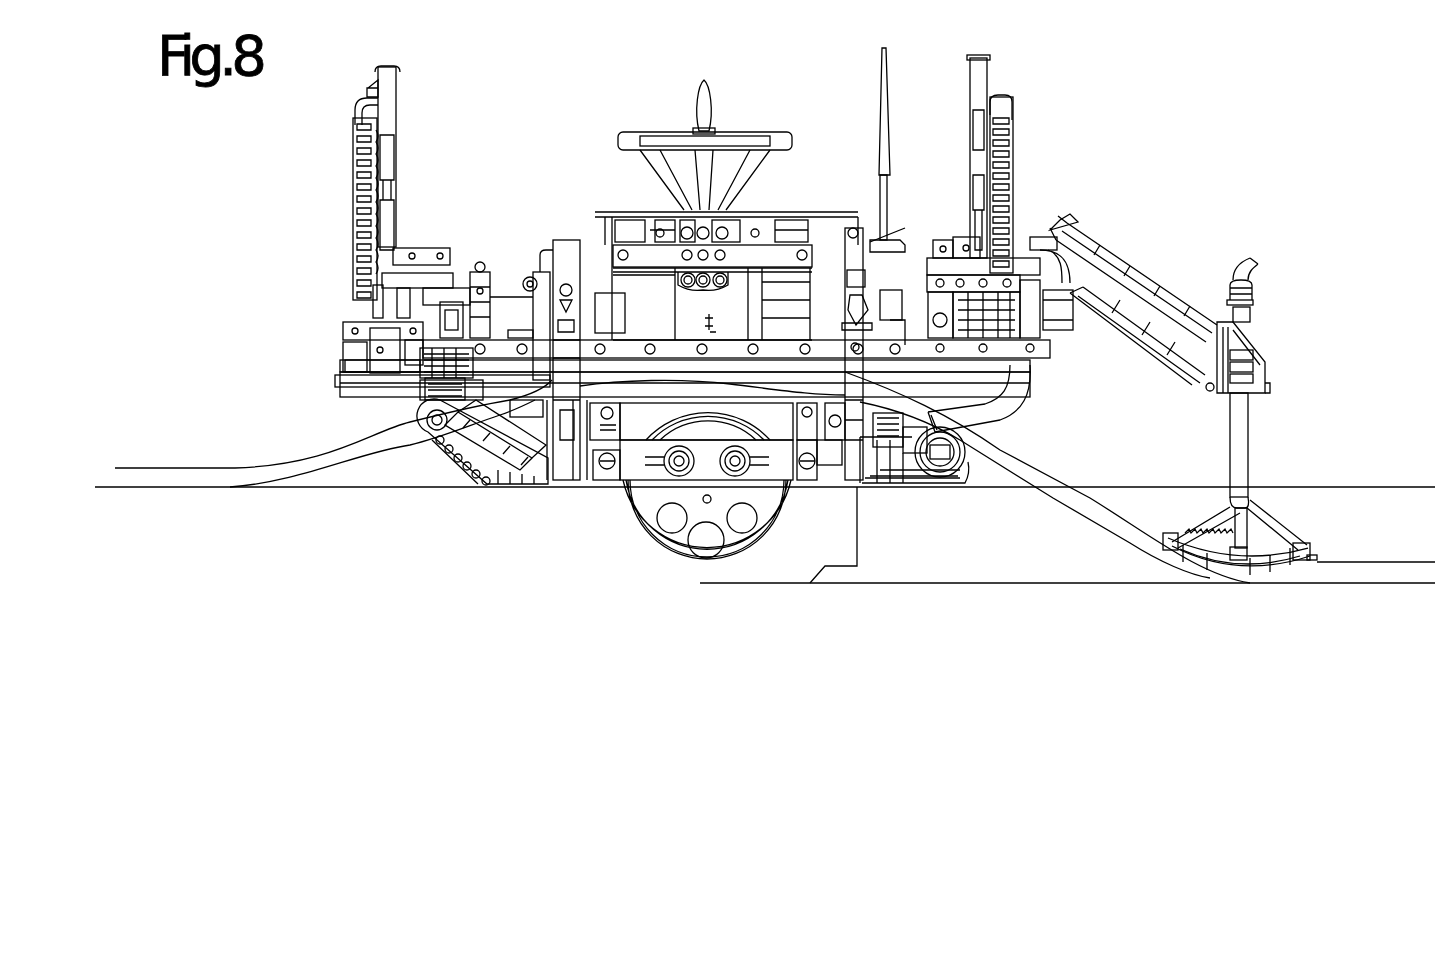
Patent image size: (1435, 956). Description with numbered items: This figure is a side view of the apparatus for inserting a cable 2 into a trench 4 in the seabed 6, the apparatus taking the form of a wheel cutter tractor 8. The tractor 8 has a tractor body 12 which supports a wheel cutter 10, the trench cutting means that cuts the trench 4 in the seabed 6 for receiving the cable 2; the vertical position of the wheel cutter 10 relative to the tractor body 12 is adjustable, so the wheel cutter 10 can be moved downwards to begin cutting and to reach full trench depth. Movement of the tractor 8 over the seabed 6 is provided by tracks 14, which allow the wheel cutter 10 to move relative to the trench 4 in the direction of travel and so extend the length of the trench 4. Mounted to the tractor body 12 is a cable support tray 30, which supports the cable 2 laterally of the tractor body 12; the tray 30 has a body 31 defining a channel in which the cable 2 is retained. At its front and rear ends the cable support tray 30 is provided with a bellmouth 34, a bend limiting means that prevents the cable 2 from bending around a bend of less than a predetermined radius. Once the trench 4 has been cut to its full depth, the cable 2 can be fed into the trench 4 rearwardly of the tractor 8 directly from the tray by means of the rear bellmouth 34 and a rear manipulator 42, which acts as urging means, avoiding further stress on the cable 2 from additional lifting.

The cable 2 is at (203, 477).
The trench 4 is at (933, 565).
The seabed 6 is at (373, 488).
The wheel cutter tractor 8 is at (531, 154).
The wheel cutter 10 is at (680, 562).
The tractor body 12 is at (560, 248).
The tracks 14 is at (497, 477).
The cable support tray 30 is at (930, 487).
The body 31 is at (810, 380).
The bellmouth 34 is at (387, 380).
The rear manipulator 42 is at (1293, 521).